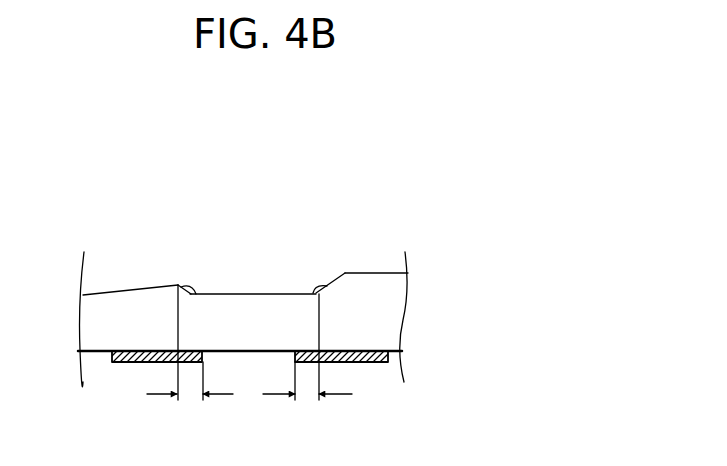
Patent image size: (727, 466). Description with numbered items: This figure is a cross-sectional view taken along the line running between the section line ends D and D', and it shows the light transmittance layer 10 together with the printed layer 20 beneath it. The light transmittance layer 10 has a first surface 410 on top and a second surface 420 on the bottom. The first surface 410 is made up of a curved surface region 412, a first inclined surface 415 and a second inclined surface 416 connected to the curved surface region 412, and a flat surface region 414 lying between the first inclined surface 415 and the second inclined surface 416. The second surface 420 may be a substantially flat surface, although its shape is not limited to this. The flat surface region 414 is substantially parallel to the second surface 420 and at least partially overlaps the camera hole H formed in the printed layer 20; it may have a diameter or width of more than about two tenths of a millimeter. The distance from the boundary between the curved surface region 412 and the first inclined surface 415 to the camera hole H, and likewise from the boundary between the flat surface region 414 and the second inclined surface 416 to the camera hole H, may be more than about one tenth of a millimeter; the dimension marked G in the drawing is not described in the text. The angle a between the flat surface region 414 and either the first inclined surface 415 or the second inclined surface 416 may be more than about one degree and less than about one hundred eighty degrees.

The light transmittance layer 10 is at (395, 305).
The printed layer 20 is at (122, 362).
The first surface 410 is at (245, 286).
The curved surface region 412 is at (143, 285).
The flat surface region 414 is at (245, 293).
The first inclined surface 415 is at (183, 287).
The second inclined surface 416 is at (323, 303).
The second surface 420 is at (393, 362).
The angle a is at (254, 279).
The gap width G is at (249, 395).
The camera hole H is at (253, 360).
The section line end D is at (72, 397).
The section line end D' is at (423, 397).